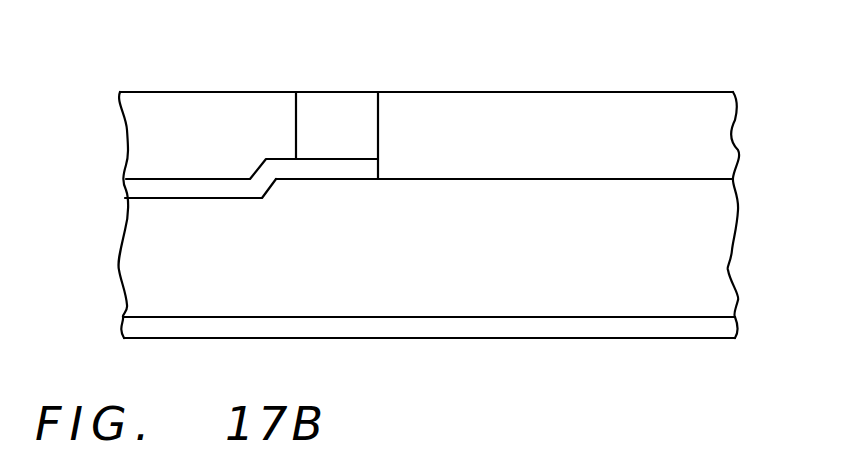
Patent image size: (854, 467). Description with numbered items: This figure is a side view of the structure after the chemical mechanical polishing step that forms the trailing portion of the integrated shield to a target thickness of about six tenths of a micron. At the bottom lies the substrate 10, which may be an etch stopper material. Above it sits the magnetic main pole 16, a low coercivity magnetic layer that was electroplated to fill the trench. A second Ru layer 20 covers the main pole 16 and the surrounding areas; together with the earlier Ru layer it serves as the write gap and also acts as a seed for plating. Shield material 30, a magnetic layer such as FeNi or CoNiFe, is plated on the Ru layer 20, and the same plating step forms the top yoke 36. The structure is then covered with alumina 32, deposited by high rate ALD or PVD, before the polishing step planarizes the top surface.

The substrate 10 is at (700, 325).
The magnetic main pole 16 is at (708, 250).
The second Ru layer 20 is at (147, 188).
The shield material 30 is at (157, 118).
The alumina 32 is at (320, 103).
The top yoke 36 is at (708, 141).